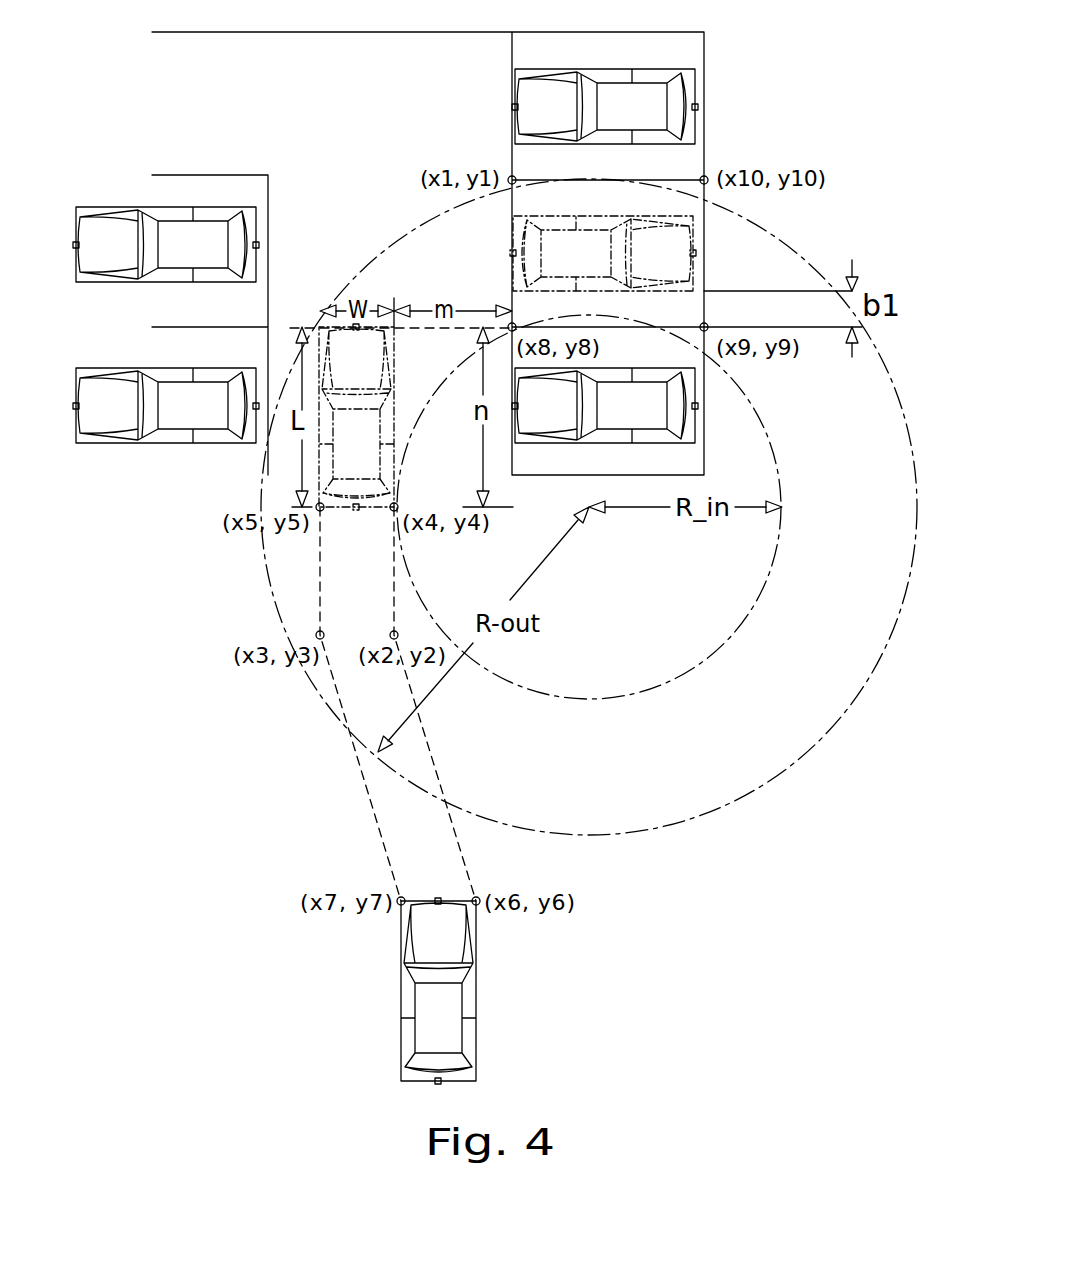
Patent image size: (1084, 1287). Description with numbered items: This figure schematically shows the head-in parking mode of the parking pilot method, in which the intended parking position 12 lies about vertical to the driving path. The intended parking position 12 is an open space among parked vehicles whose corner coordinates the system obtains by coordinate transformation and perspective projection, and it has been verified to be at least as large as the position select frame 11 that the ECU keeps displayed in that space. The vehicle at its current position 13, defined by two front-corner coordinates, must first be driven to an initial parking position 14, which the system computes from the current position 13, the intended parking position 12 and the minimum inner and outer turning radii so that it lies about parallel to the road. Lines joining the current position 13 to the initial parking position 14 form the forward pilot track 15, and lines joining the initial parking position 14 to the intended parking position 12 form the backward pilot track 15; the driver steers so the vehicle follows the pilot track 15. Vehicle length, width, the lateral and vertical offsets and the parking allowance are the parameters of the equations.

The position select frame 11 is at (704, 224).
The intended parking position 12 is at (704, 258).
The current position 13 is at (402, 985).
The initial parking position 14 is at (323, 327).
The pilot track 15 is at (364, 777).